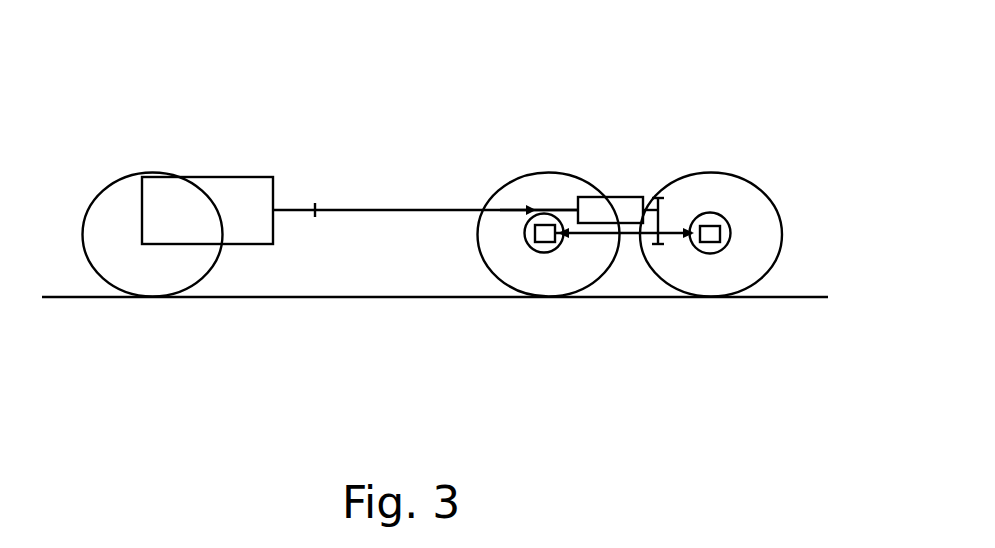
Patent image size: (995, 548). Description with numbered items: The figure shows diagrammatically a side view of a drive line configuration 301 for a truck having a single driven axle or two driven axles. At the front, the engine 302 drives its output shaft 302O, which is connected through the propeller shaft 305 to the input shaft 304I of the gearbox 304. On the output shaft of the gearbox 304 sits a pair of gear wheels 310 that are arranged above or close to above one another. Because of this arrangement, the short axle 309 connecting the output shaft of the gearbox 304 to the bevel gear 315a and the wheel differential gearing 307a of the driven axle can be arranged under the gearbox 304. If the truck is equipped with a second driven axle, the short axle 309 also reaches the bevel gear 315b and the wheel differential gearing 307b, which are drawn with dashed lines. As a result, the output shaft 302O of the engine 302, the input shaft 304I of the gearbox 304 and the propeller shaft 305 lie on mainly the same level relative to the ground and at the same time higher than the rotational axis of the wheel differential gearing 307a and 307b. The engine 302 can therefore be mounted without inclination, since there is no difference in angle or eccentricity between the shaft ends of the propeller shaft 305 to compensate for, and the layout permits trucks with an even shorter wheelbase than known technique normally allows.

The drive line configuration 301 is at (134, 77).
The engine 302 is at (218, 172).
The output shaft of the engine 302O is at (300, 210).
The propeller shaft 305 is at (393, 202).
The input shaft of the gearbox 304I is at (541, 210).
The gearbox 304 is at (618, 193).
The pair of gear wheels 310 is at (672, 220).
The short axle 309 is at (627, 238).
The wheel differential gearing 307a is at (533, 237).
The bevel gear 315a is at (567, 248).
The wheel differential gearing 307b is at (722, 241).
The bevel gear 315b is at (694, 239).